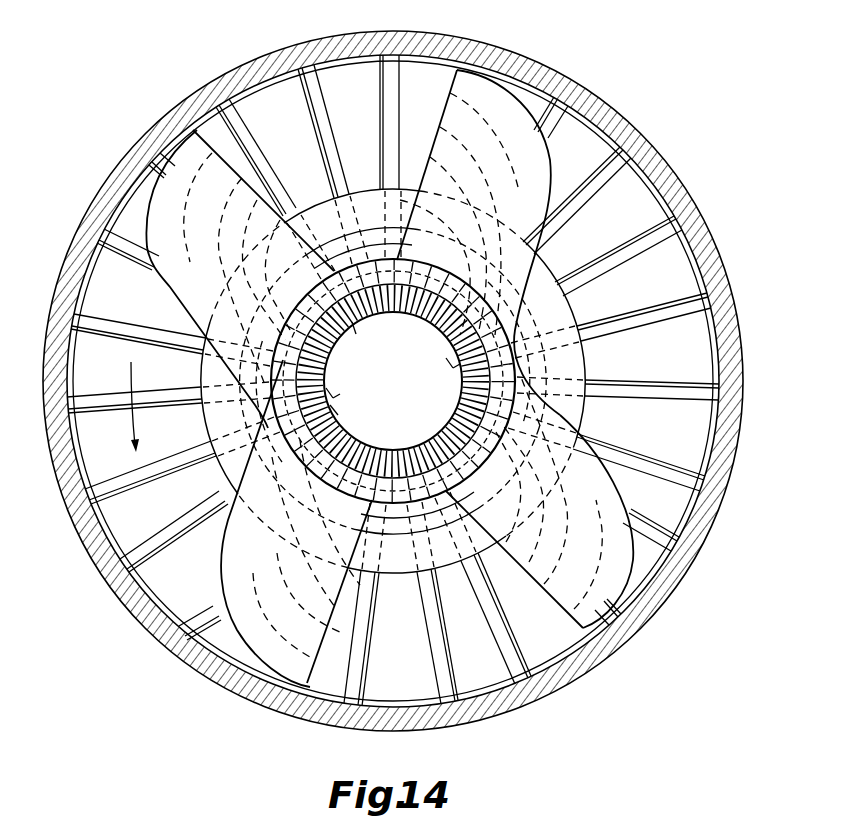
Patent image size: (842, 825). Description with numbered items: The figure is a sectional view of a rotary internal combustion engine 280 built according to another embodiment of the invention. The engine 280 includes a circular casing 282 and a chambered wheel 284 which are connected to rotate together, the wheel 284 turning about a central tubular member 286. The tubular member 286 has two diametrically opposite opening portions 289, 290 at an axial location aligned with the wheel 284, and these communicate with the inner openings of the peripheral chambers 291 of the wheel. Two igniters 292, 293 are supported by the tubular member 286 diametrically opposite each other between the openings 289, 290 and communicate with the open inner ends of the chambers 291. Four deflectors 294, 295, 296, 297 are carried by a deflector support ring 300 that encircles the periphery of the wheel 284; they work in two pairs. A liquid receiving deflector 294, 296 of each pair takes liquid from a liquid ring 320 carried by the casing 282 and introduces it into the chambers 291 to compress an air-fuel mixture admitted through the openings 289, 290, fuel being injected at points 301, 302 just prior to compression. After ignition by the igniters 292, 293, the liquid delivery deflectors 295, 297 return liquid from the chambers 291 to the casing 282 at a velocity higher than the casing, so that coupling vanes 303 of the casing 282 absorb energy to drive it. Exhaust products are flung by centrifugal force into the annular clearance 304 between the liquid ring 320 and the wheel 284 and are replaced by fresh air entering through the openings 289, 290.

The rotary internal combustion engine 280 is at (597, 92).
The circular casing 282 is at (667, 167).
The chambered wheel 284 is at (370, 258).
The central member 286 is at (447, 403).
The opening portion 289 is at (420, 318).
The opening portion 290 is at (433, 430).
The peripheral chamber 291 is at (388, 577).
The igniter 292 is at (330, 393).
The igniter 293 is at (450, 363).
The deflector 294 is at (170, 278).
The deflector 295 is at (218, 565).
The deflector 296 is at (627, 503).
The deflector 297 is at (541, 164).
The deflector support ring 300 is at (457, 567).
The fuel injection point 301 is at (373, 327).
The fuel injection point 302 is at (359, 406).
The coupling vane 303 is at (523, 655).
The annular clearance 304 is at (327, 210).
The liquid ring 320 is at (220, 483).